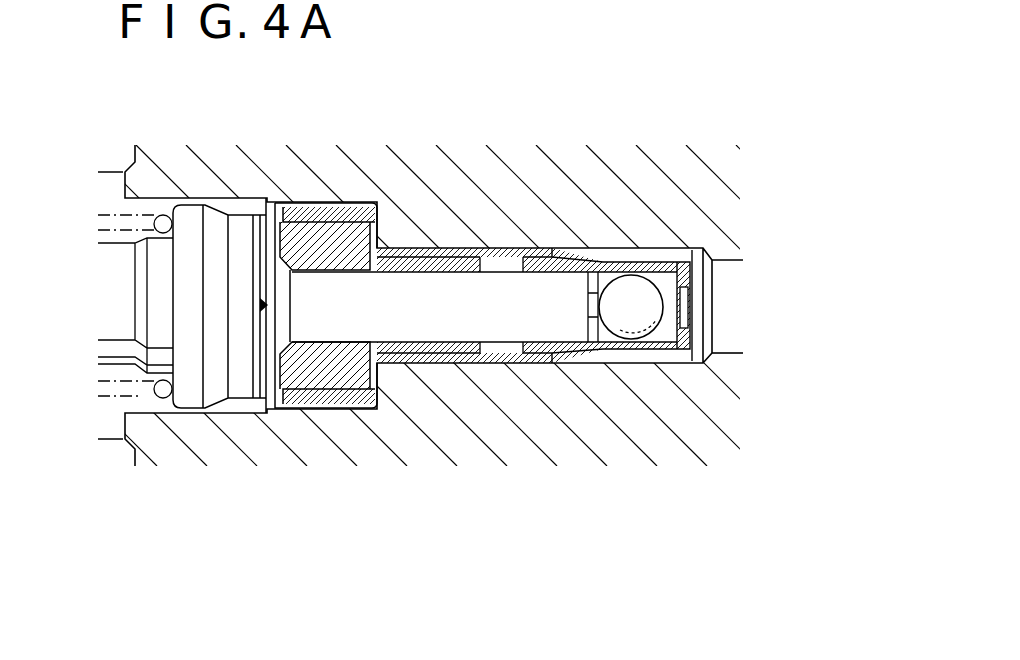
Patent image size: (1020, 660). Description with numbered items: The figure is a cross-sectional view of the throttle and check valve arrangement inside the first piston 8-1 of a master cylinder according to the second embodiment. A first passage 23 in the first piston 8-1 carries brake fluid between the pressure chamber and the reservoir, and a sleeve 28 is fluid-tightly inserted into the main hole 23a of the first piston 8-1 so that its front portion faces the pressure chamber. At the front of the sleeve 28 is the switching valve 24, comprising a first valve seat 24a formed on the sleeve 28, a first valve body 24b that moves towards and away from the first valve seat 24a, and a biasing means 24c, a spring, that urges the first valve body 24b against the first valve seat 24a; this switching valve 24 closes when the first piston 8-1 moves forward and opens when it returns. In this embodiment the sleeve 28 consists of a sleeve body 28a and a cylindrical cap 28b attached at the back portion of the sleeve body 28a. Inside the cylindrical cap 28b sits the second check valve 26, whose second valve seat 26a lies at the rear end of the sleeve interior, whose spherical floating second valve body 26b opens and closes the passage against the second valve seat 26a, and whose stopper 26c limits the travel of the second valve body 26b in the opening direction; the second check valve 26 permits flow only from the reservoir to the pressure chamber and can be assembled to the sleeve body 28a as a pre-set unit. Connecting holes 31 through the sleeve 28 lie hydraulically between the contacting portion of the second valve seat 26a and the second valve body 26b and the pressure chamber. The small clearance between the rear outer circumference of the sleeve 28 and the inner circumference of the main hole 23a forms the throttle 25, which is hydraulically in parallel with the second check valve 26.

The first piston 8-1 is at (718, 188).
The first passage 23 is at (725, 303).
The main hole 23a is at (727, 353).
The switching valve 24 is at (204, 418).
The first valve seat 24a is at (266, 413).
The first valve body 24b is at (217, 410).
The biasing means 24c is at (142, 396).
The throttle 25 is at (535, 363).
The second check valve 26 is at (640, 439).
The second valve seat 26a is at (670, 350).
The second valve body 26b is at (628, 320).
The stopper 26c is at (597, 345).
The sleeve 28 is at (548, 315).
The sleeve body 28a is at (335, 410).
The cylindrical cap 28b is at (660, 265).
The connecting holes 31 is at (495, 347).